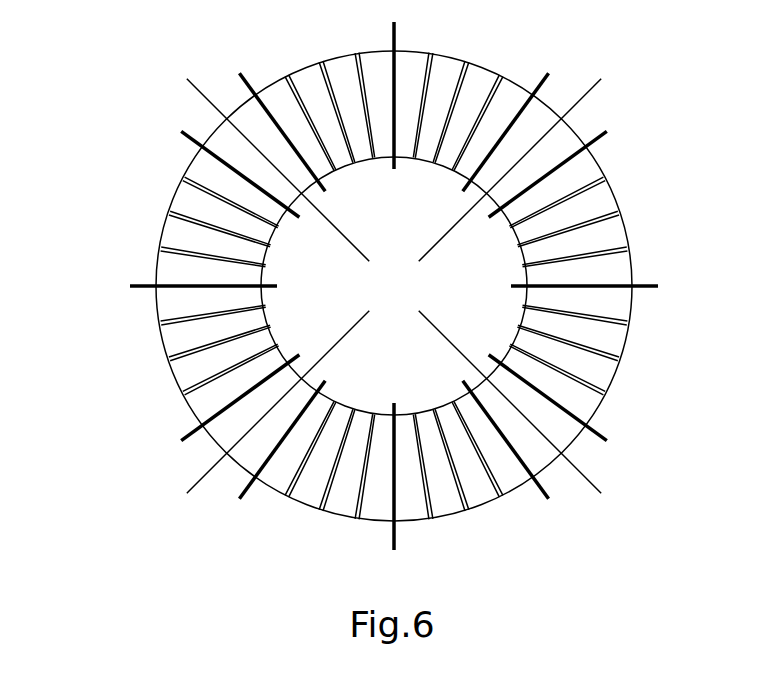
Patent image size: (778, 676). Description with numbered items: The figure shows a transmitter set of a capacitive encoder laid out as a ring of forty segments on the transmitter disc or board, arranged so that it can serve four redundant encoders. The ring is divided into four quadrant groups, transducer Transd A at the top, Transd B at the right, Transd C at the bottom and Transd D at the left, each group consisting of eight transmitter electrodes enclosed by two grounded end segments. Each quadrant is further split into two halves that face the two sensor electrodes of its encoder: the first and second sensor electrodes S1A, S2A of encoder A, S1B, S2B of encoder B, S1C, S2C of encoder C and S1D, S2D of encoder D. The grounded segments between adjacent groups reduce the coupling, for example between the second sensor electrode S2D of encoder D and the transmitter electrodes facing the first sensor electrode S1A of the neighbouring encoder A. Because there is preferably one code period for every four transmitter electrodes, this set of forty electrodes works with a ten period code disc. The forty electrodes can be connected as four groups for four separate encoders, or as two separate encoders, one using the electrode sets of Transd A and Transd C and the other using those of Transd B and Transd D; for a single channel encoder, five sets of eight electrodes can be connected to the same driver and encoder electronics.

The transducer A Transd A is at (551, 54).
The transducer B Transd B is at (561, 284).
The transducer C Transd C is at (396, 453).
The transducer D Transd D is at (226, 288).
The first sensor electrode of encoder A S1A is at (394, 31).
The second sensor electrode of encoder A S2A is at (443, 36).
The first sensor electrode of encoder B S1B is at (573, 208).
The second sensor electrode of encoder B S2B is at (570, 363).
The first sensor electrode of encoder C S1C is at (471, 465).
The second sensor electrode of encoder C S2C is at (316, 462).
The first sensor electrode of encoder D S1D is at (214, 363).
The second sensor electrode of encoder D S2D is at (218, 208).